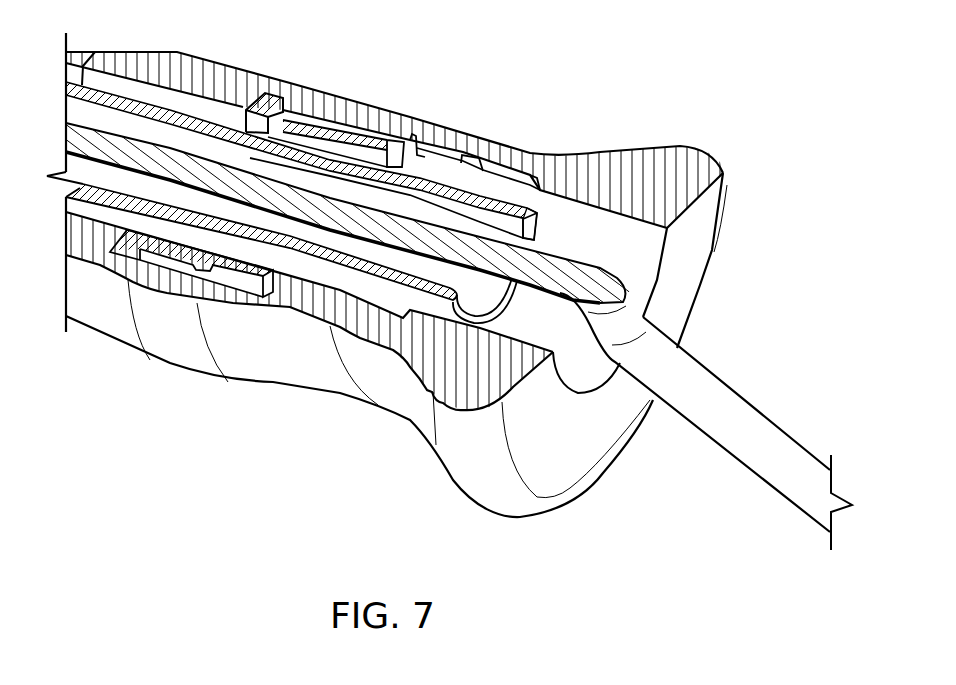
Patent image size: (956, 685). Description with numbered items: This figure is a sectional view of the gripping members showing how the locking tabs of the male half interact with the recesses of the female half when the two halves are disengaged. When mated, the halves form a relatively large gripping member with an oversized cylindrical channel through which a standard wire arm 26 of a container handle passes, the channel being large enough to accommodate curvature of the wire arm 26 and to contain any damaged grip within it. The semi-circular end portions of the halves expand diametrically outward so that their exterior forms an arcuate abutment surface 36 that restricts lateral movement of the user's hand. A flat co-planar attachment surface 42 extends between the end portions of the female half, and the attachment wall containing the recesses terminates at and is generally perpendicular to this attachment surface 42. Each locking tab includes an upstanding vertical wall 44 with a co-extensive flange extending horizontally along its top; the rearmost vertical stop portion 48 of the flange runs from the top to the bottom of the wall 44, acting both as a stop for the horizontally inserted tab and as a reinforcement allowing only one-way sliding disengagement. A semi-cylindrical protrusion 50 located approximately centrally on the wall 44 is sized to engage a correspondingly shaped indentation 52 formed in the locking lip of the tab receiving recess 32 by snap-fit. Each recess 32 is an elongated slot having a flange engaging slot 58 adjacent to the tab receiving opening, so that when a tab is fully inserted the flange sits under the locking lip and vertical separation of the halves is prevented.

The wire arm 26 is at (755, 458).
The tab receiving recess 32 is at (412, 140).
The arcuate abutment surface 36 is at (420, 416).
The attachment surface 42 is at (655, 172).
The wall 44 is at (293, 117).
The vertical stop portion 48 is at (267, 92).
The semi-cylindrical protrusion 50 is at (337, 121).
The indentation 52 is at (471, 158).
The flange engaging slot 58 is at (510, 178).